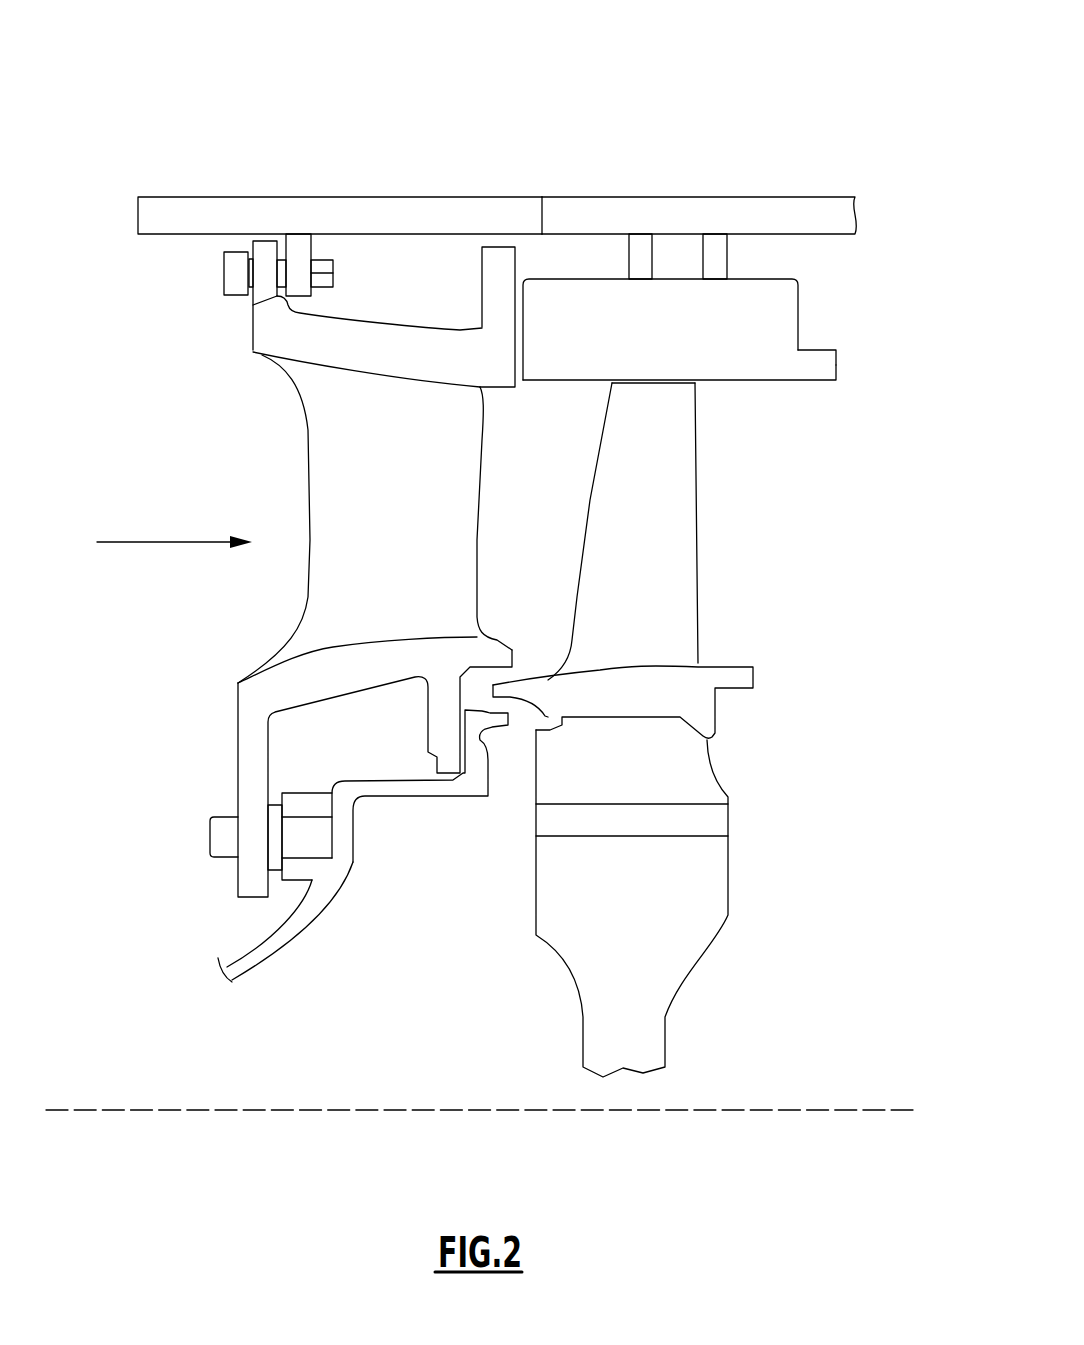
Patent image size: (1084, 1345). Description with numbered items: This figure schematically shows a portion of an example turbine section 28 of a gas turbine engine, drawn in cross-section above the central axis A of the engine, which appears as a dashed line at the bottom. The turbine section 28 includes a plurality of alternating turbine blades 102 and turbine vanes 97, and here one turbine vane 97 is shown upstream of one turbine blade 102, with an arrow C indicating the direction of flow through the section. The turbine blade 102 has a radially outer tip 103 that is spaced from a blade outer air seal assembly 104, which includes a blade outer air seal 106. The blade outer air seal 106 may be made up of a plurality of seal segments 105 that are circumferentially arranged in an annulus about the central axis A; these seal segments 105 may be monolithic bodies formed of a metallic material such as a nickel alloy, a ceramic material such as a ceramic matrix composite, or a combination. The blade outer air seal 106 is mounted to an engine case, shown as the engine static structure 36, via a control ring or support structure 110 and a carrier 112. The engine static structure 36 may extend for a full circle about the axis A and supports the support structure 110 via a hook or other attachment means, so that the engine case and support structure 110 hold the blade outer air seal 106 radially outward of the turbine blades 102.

The turbine section 28 is at (781, 82).
The engine static structure 36 is at (202, 215).
The turbine vane 97 is at (485, 360).
The turbine blade 102 is at (683, 503).
The radially outer tip 103 is at (677, 383).
The blade outer air seal assembly 104 is at (852, 296).
The seal segment 105 is at (823, 354).
The blade outer air seal 106 is at (820, 370).
The support structure 110 is at (585, 210).
The carrier 112 is at (642, 257).
The core flow path direction C is at (128, 542).
The central axis A is at (847, 1110).